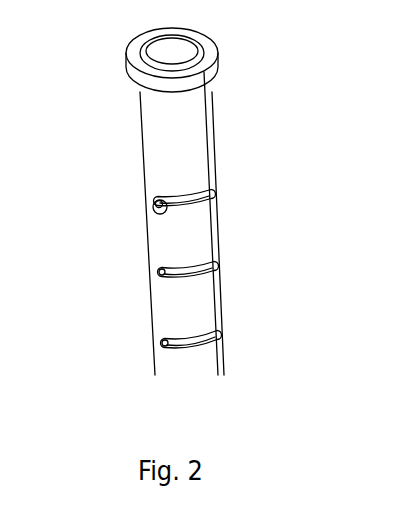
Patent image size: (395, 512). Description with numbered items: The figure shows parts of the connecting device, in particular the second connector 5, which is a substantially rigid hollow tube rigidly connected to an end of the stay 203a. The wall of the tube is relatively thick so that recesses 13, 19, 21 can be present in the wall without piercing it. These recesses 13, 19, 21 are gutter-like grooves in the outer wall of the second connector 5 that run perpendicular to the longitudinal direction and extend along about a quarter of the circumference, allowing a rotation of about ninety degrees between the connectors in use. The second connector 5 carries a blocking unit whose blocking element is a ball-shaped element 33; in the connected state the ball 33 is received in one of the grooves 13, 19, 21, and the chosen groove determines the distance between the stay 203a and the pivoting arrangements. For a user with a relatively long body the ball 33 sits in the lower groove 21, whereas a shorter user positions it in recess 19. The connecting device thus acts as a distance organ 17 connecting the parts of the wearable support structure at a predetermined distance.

The stay 203a is at (128, 57).
The second connector 5 is at (213, 122).
The recess 13 is at (213, 185).
The ball-shaped element 33 is at (152, 204).
The recess 19 is at (218, 262).
The recess 21 is at (222, 333).
The distance organ 17 is at (311, 227).